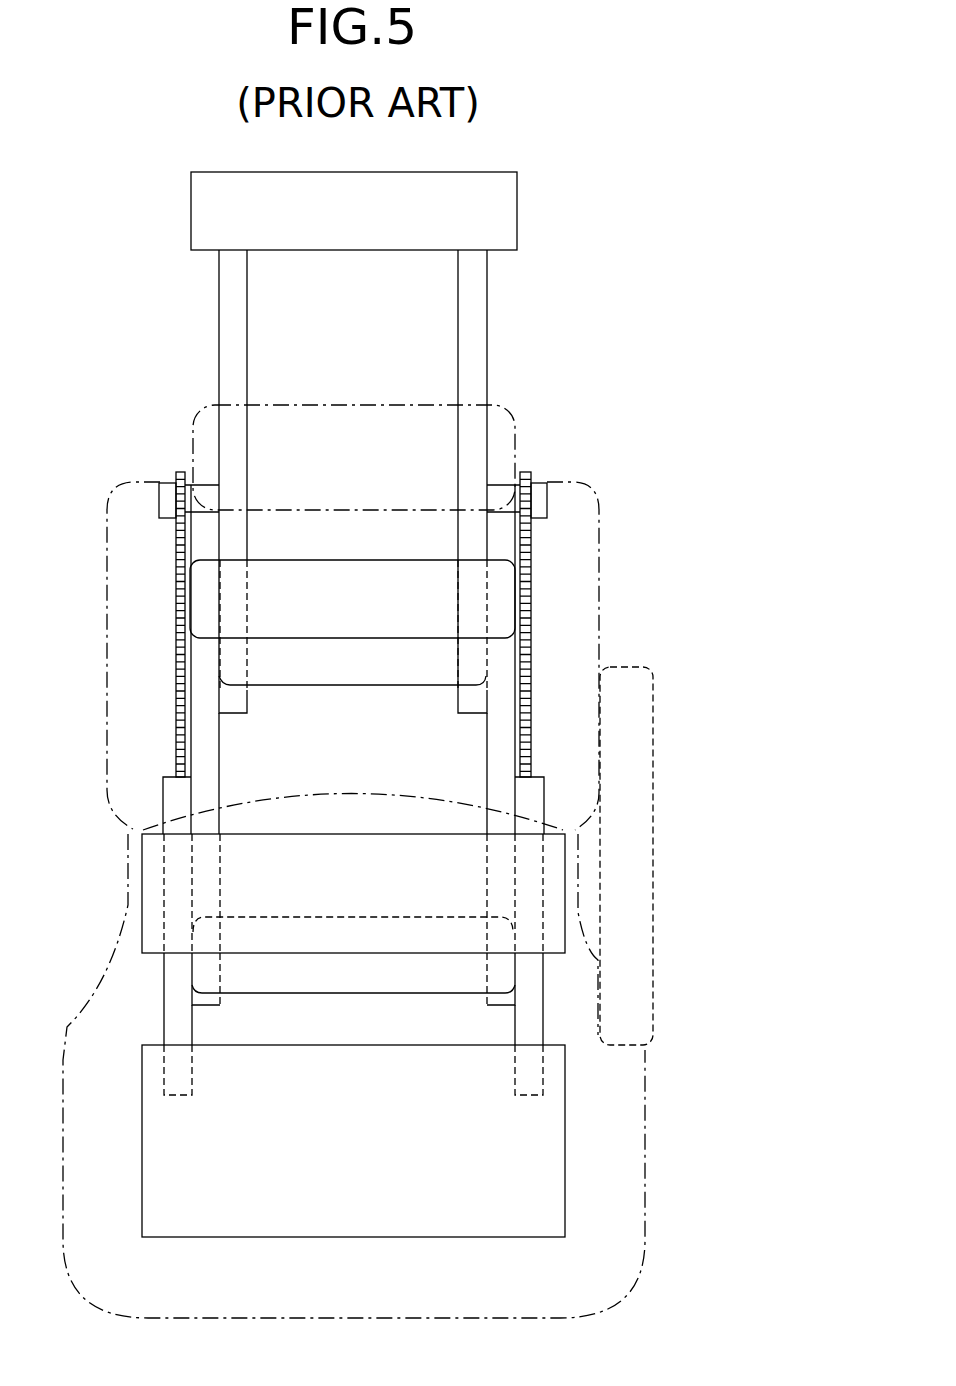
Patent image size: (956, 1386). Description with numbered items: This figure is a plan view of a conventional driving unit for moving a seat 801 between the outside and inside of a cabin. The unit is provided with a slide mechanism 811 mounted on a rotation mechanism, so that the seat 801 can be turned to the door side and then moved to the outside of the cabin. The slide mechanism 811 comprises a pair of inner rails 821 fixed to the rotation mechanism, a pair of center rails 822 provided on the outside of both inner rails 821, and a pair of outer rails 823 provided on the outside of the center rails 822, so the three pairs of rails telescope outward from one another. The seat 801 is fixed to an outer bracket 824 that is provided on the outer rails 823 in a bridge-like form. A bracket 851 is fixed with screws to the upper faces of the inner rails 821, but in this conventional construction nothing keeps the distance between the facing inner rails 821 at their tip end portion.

The seat 801 is at (601, 487).
The slide mechanism 811 is at (525, 296).
The inner rails 821 is at (240, 368).
The center rails 822 is at (497, 787).
The outer rails 823 is at (525, 1023).
The outer bracket 824 is at (538, 1148).
The bracket 851 is at (470, 660).